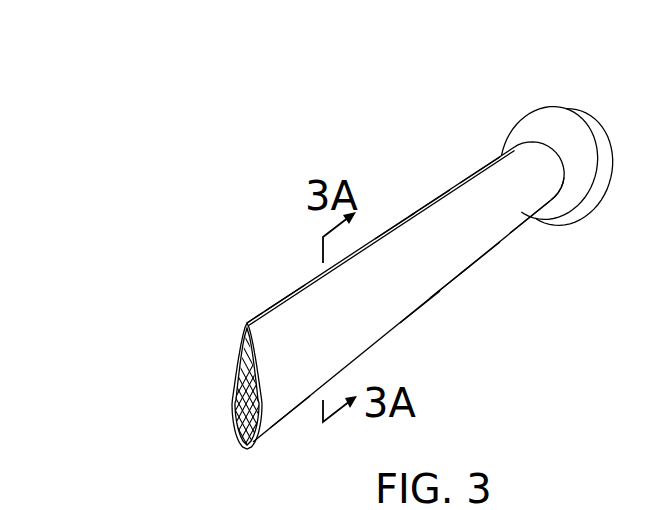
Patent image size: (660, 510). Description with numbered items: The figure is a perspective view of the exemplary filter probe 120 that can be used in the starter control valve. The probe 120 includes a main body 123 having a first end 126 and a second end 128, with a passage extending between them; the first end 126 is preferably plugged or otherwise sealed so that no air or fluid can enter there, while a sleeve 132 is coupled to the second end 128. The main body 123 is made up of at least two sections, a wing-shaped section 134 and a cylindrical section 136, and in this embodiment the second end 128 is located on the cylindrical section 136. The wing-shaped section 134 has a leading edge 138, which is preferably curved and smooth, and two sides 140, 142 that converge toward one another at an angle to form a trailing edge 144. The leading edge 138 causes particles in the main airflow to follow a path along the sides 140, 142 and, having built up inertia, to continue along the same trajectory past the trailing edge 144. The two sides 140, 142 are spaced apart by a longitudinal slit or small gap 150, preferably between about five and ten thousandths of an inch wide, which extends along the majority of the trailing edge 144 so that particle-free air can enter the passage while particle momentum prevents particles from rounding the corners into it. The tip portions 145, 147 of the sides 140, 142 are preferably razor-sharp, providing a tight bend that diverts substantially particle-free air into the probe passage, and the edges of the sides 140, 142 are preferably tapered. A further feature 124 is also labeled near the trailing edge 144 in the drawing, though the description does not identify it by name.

The probe 120 is at (384, 148).
The sleeve 132 is at (542, 118).
The gap 150 is at (472, 175).
The trailing edge 144 is at (425, 206).
The tubular body 124 is at (390, 229).
The tip portion 147 is at (283, 299).
The tip portion 145 is at (247, 322).
The first end 126 is at (237, 412).
The side 142 is at (232, 397).
The side 140 is at (286, 404).
The leading edge 138 is at (446, 282).
The main body 123 is at (467, 252).
The wing-shaped section 134 is at (425, 320).
The cylindrical section 136 is at (531, 233).
The second end 128 is at (563, 210).